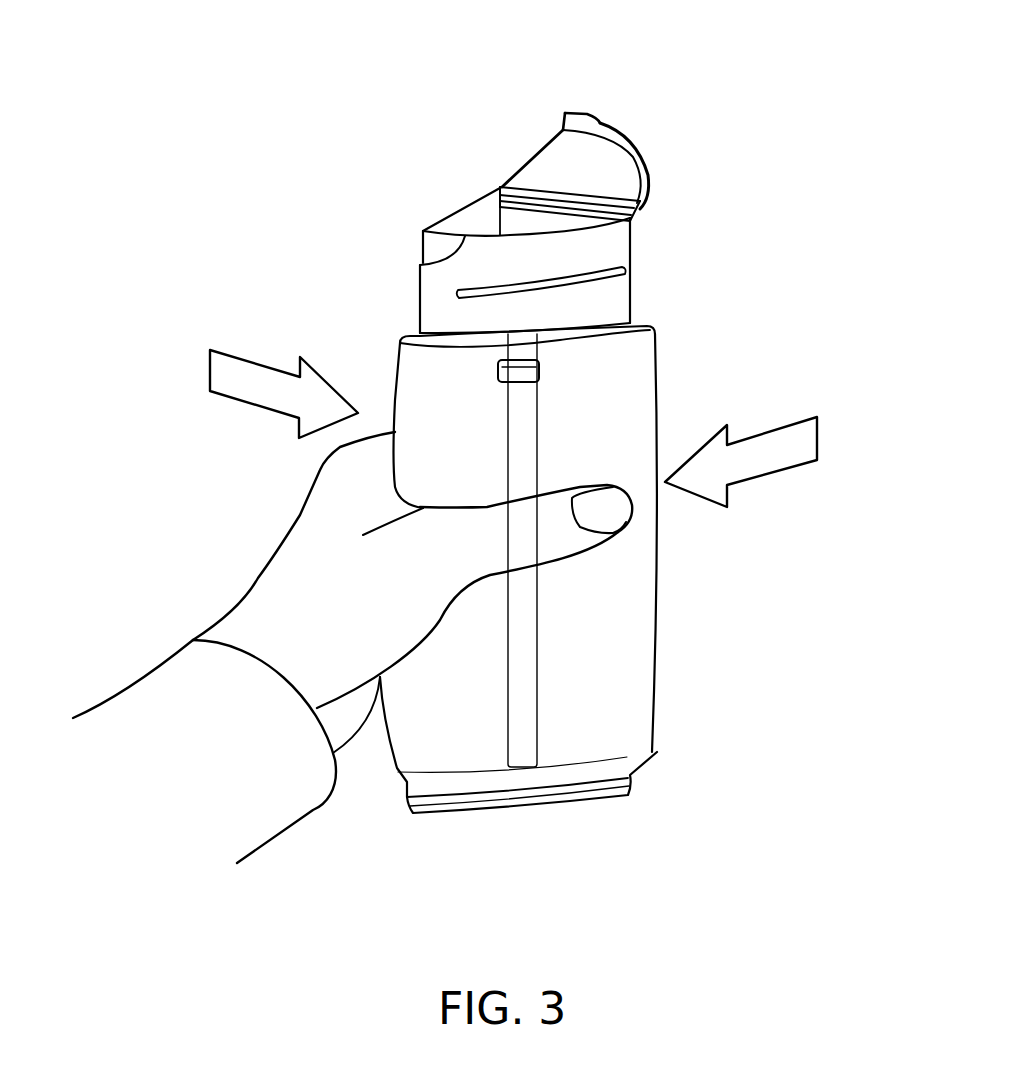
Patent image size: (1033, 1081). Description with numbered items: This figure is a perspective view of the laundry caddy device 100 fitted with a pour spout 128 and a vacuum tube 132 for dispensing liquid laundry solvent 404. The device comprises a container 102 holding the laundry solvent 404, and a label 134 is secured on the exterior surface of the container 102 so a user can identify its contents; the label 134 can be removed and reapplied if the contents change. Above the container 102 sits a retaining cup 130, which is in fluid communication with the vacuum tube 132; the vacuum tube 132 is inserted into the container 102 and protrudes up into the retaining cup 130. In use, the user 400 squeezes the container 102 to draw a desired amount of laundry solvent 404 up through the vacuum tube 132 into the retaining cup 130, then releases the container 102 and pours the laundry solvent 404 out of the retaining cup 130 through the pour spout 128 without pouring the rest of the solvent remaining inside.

The laundry caddy device 100 is at (672, 102).
The container 102 is at (601, 700).
The pour spout 128 is at (489, 176).
The retaining cup 130 is at (628, 250).
The vacuum tube 132 is at (518, 390).
The label 134 is at (513, 697).
The user 400 is at (268, 597).
The laundry solvent 404 is at (590, 617).